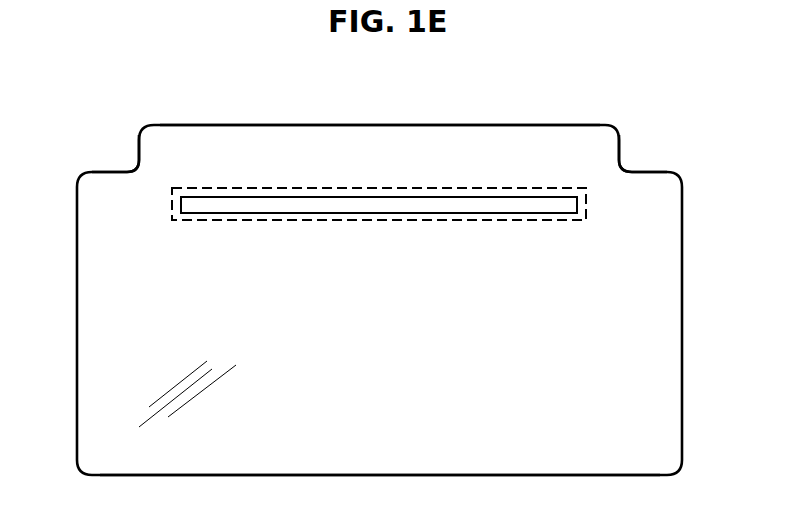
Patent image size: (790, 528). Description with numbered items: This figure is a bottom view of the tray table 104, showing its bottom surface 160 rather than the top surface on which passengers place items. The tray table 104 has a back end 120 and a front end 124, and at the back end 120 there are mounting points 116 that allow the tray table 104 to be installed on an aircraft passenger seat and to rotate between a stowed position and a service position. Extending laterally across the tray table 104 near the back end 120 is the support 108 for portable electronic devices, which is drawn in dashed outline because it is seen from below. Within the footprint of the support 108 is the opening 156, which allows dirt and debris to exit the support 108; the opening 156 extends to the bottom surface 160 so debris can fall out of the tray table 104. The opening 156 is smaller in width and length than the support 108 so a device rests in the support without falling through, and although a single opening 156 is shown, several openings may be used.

The tray table 104 is at (522, 101).
The back end 120 is at (280, 125).
The front end 124 is at (378, 475).
The mounting points 116 is at (119, 139).
The support 108 is at (203, 188).
The opening 156 is at (255, 213).
The bottom surface 160 is at (392, 403).